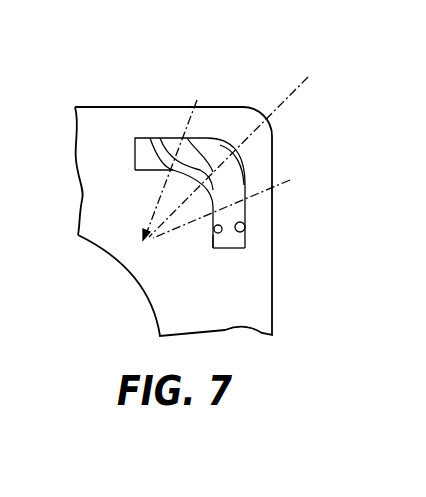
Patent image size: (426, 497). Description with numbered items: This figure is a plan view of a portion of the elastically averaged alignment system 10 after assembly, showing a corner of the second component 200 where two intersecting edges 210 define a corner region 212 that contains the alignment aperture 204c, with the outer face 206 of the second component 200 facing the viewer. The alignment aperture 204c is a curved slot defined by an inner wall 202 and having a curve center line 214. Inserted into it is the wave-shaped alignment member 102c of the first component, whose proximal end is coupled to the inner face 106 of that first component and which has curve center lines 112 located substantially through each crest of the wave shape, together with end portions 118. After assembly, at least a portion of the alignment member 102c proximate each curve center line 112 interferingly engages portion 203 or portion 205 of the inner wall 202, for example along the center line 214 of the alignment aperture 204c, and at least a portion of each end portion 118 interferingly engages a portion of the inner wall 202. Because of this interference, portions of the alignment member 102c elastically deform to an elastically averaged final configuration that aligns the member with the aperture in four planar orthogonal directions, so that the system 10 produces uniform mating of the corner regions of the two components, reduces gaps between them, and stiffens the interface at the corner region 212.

The elastically averaged alignment system 10 is at (127, 316).
The second component 200 is at (252, 311).
The edges 210 is at (107, 123).
The outer face 206 is at (122, 103).
The curve center line 112 is at (190, 98).
The curve center line 214 is at (228, 157).
The inner face 106 is at (145, 143).
The alignment member 102c is at (165, 143).
The corner region 212 is at (256, 146).
The end portions 118 is at (163, 137).
The inner wall 202 is at (213, 247).
The portion of inner wall 203 is at (246, 226).
The portion of inner wall 205 is at (201, 241).
The alignment aperture 204c is at (227, 240).